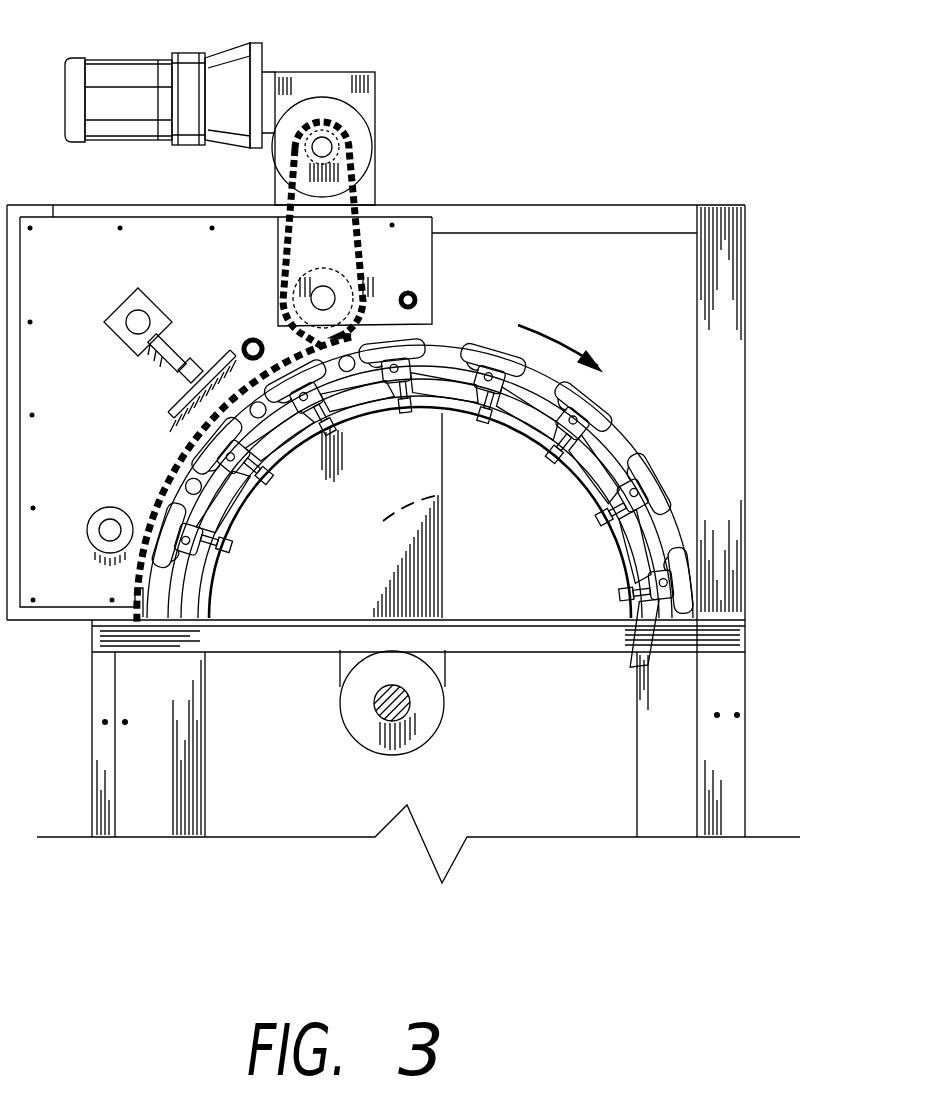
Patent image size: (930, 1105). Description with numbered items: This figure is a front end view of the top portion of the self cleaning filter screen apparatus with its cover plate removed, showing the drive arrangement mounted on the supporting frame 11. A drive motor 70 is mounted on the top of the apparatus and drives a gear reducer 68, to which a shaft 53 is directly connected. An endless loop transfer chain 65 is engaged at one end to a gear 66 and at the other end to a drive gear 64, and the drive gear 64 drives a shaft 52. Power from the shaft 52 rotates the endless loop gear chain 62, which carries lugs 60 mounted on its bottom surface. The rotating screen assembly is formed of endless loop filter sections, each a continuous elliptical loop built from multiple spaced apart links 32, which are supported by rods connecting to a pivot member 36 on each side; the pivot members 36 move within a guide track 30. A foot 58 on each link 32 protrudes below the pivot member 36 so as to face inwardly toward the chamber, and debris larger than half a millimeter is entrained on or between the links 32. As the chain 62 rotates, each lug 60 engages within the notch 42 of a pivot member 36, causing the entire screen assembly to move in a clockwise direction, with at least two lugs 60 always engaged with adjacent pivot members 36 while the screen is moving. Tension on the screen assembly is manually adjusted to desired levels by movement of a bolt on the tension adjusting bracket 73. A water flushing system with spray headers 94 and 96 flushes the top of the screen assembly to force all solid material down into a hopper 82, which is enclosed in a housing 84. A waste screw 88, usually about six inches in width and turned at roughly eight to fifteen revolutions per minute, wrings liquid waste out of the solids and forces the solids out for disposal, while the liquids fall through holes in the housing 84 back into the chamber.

The supporting frame 11 is at (745, 740).
The guide track 30 is at (593, 505).
The links 32 is at (230, 518).
The pivot member 36 is at (615, 428).
The notch 42 is at (440, 353).
The shaft 52 is at (334, 290).
The shaft 53 is at (343, 137).
The foot 58 is at (213, 567).
The lug 60 is at (166, 494).
The endless loop gear chain 62 is at (180, 453).
The drive gear 64 is at (333, 263).
The endless loop transfer chain 65 is at (280, 250).
The gear 66 is at (352, 178).
The gear reducer 68 is at (343, 73).
The drive motor 70 is at (118, 58).
The tension adjusting bracket 73 is at (158, 307).
The hopper 82 is at (445, 493).
The housing 84 is at (446, 538).
The waste screw 88 is at (412, 700).
The spray header 94 is at (253, 337).
The spray header 96 is at (419, 300).